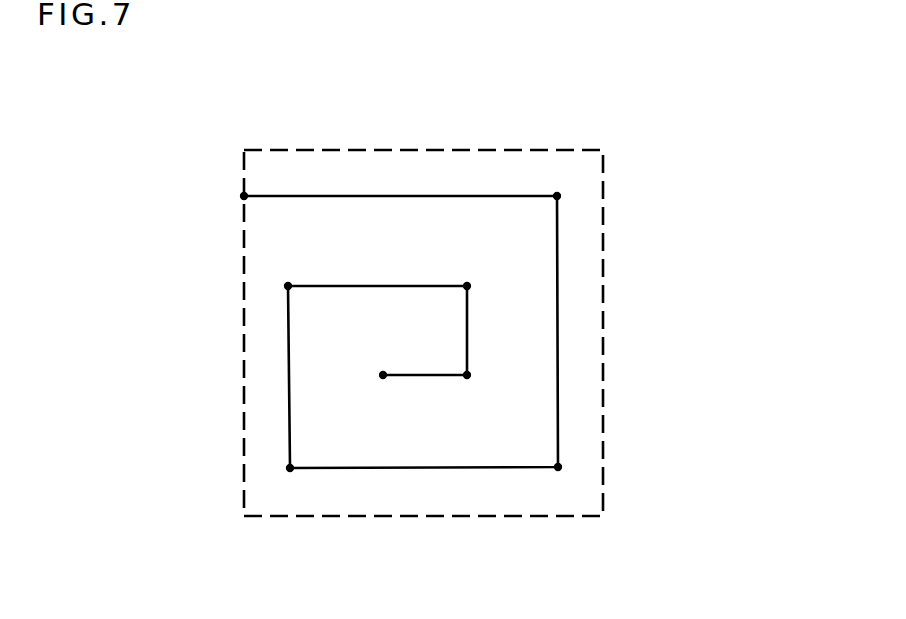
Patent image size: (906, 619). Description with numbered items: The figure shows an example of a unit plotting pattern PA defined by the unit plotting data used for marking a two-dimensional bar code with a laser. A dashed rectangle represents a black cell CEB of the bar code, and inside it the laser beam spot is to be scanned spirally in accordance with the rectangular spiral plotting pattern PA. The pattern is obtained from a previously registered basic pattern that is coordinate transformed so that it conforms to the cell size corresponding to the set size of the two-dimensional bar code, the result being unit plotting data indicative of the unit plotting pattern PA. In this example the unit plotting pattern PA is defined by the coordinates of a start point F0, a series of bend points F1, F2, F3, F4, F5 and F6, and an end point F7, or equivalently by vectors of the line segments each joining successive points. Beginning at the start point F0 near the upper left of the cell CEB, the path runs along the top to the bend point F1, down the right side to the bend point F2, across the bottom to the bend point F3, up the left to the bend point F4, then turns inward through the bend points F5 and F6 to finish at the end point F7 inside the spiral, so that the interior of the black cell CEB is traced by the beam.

The black cell CEB is at (460, 150).
The unit plotting pattern PA is at (603, 310).
The start point F0 is at (244, 196).
The bend point F1 is at (557, 196).
The bend point F2 is at (558, 467).
The bend point F3 is at (290, 468).
The bend point F4 is at (288, 286).
The bend point F5 is at (490, 252).
The bend point F6 is at (467, 375).
The end point F7 is at (383, 375).